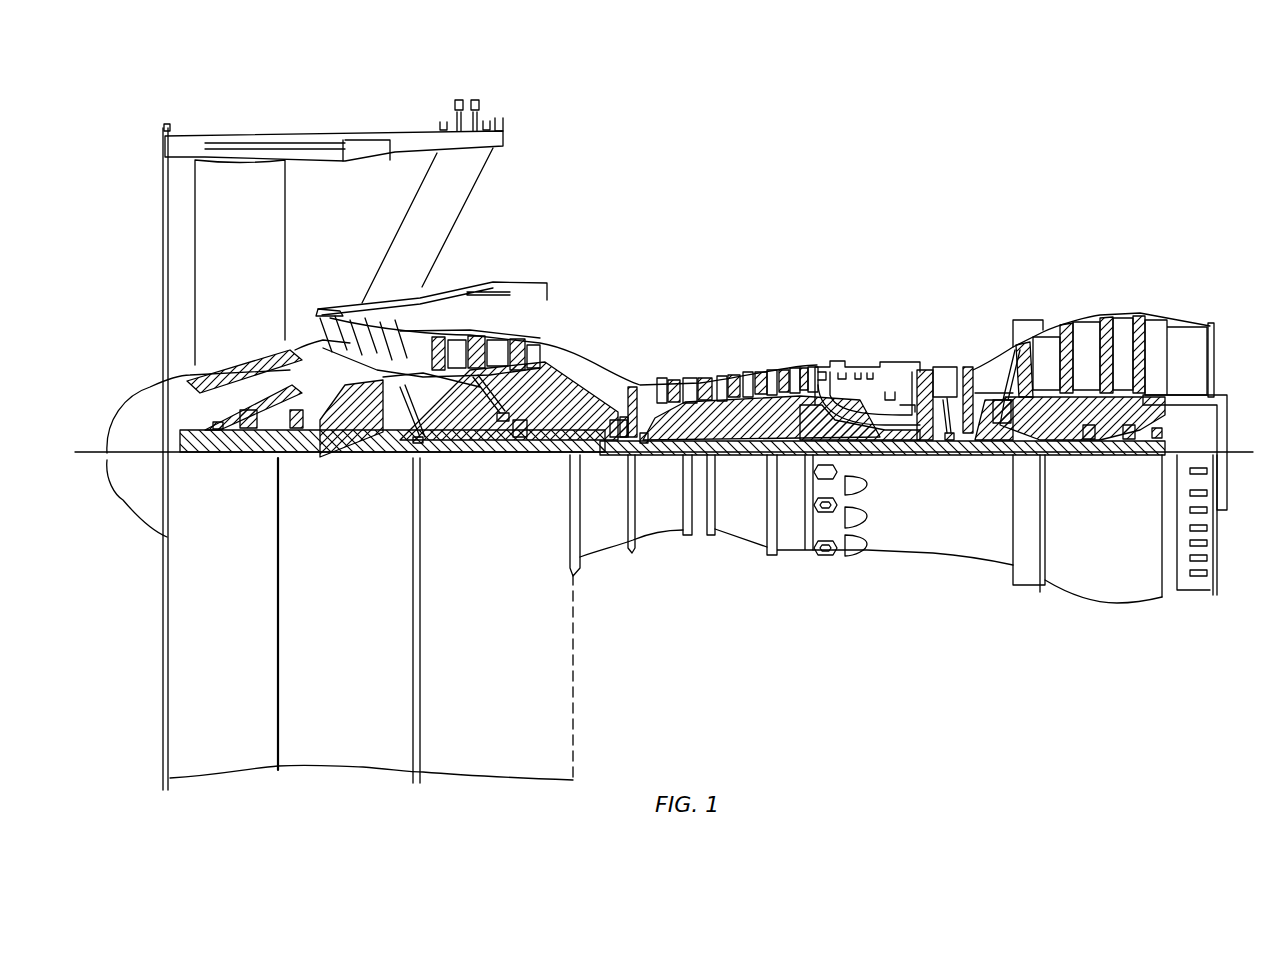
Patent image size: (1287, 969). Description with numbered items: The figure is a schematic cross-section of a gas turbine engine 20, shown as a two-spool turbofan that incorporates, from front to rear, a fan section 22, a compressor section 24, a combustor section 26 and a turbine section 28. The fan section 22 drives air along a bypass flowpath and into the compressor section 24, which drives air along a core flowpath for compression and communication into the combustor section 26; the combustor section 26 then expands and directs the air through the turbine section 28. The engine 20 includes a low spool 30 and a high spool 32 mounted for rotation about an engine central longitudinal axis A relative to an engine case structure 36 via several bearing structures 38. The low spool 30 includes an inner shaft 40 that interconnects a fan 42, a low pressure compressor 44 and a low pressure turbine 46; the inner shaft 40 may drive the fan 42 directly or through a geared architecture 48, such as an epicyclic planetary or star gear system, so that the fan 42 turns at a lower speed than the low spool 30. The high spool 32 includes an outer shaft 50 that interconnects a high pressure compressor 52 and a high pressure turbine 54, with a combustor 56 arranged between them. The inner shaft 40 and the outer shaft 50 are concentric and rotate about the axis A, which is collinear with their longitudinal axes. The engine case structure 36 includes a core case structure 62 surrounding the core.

The gas turbine engine 20 is at (982, 186).
The fan section 22 is at (155, 113).
The compressor section 24 is at (422, 250).
The combustor section 26 is at (815, 250).
The turbine section 28 is at (1155, 250).
The low spool 30 is at (745, 460).
The high spool 32 is at (790, 405).
The engine case structure 36 is at (795, 560).
The bearing structures 38 is at (445, 512).
The inner shaft 40 is at (592, 457).
The fan 42 is at (252, 254).
The low pressure compressor 44 is at (497, 342).
The low pressure turbine 46 is at (1078, 343).
The geared architecture 48 is at (368, 458).
The outer shaft 50 is at (878, 447).
The high pressure compressor 52 is at (730, 412).
The high pressure turbine 54 is at (940, 395).
The combustor 56 is at (880, 395).
The core case structure 62 is at (648, 456).
The engine central longitudinal axis A is at (1246, 442).